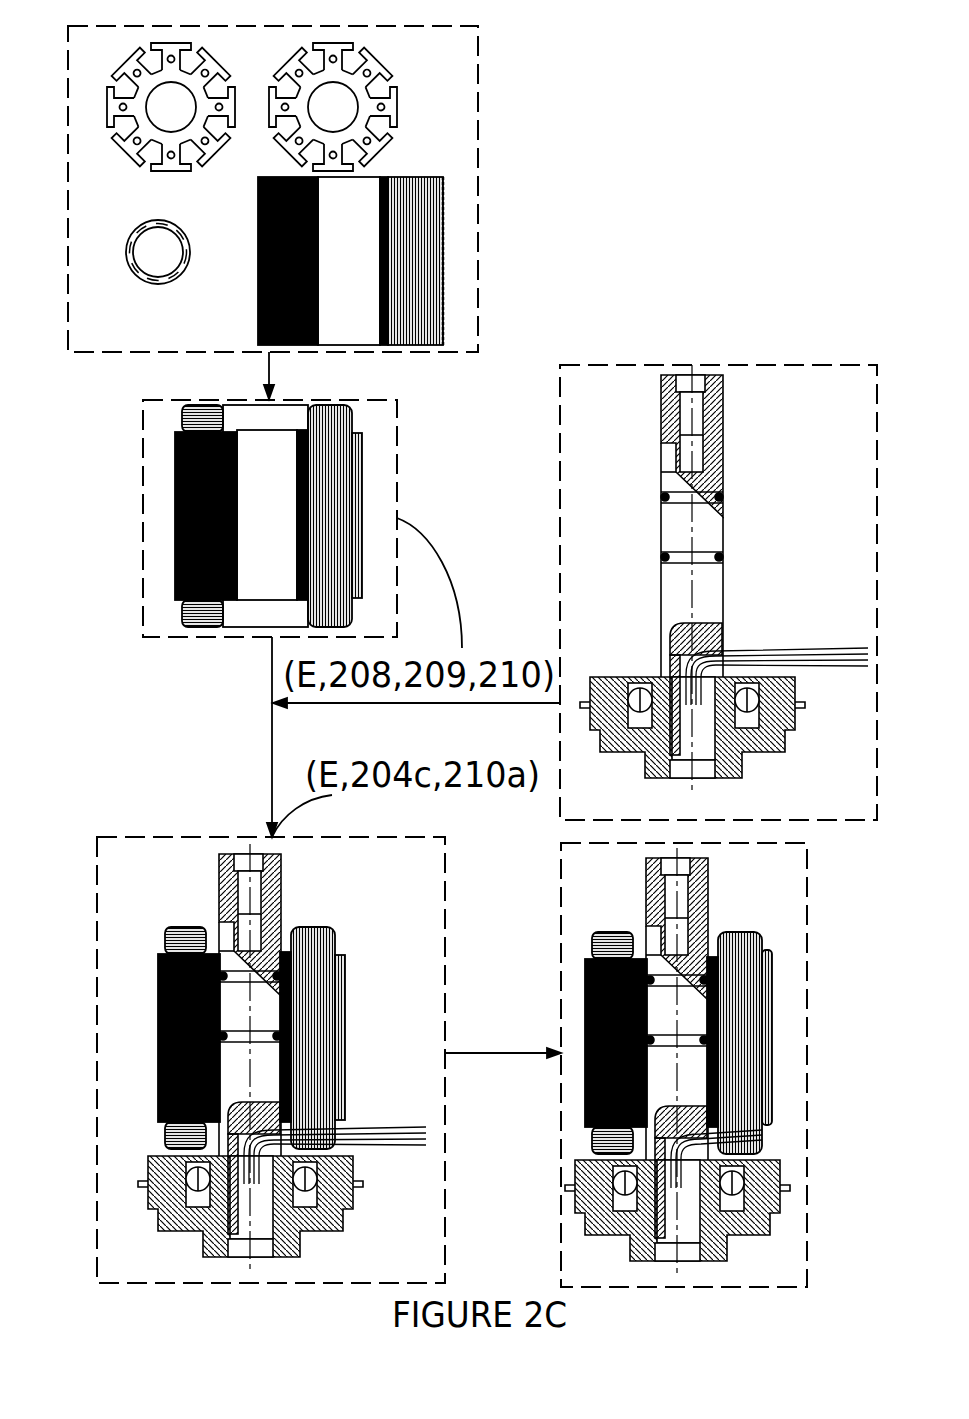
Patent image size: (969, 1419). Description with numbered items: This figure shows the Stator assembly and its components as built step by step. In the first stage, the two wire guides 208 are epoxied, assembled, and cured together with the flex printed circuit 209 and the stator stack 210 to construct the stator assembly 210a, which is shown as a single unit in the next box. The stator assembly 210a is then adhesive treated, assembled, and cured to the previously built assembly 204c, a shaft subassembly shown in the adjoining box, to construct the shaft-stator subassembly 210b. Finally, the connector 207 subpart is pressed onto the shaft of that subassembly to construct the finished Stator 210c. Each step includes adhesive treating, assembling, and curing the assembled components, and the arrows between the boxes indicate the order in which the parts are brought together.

The wire guides 208 is at (182, 43).
The flex printed circuit 209 is at (137, 277).
The stator stack 210 is at (407, 248).
The stator assembly 210a is at (328, 518).
The assembly 204c is at (708, 533).
The shaft-stator subassembly 210b is at (248, 1003).
The connector 207 is at (363, 1135).
The Stator 210c is at (683, 1062).